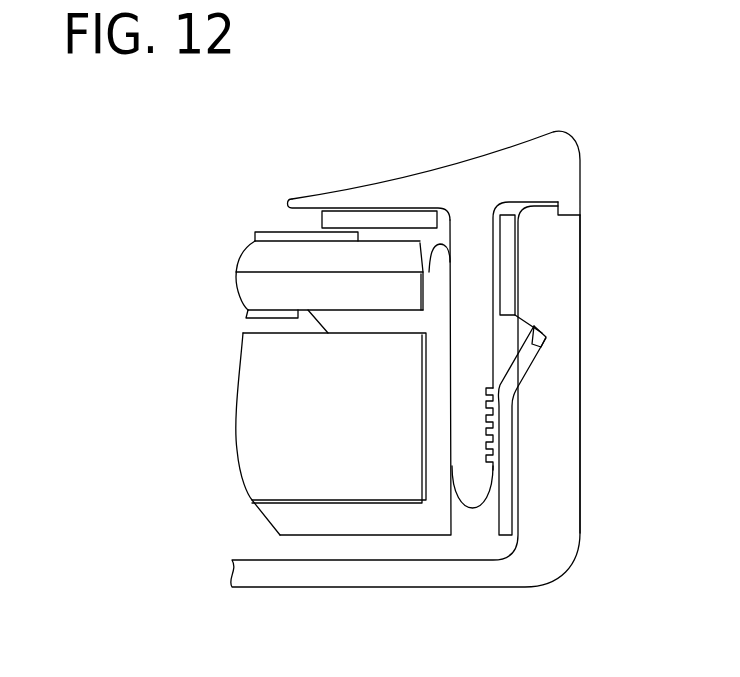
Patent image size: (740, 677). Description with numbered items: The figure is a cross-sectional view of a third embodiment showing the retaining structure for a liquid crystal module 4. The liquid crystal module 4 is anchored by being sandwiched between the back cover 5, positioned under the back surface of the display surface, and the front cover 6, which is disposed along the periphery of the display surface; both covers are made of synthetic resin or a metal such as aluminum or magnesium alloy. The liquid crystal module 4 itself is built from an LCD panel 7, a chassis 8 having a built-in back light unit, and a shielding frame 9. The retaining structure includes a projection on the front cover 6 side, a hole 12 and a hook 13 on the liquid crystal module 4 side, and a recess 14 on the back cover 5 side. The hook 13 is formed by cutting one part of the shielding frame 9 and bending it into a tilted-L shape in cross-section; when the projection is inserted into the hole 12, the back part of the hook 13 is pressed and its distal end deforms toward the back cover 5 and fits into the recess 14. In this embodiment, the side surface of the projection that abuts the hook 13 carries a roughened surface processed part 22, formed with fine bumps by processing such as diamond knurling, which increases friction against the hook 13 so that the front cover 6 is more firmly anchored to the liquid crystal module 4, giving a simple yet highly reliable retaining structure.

The liquid crystal module 4 is at (170, 411).
The back cover 5 is at (563, 482).
The front cover 6 is at (513, 137).
The LCD panel 7 is at (255, 292).
The chassis 8 is at (282, 517).
The shielding frame 9 is at (375, 215).
The hole 12 is at (438, 213).
The hook 13 is at (520, 358).
The recess 14 is at (539, 318).
The roughened surface processed part 22 is at (490, 427).